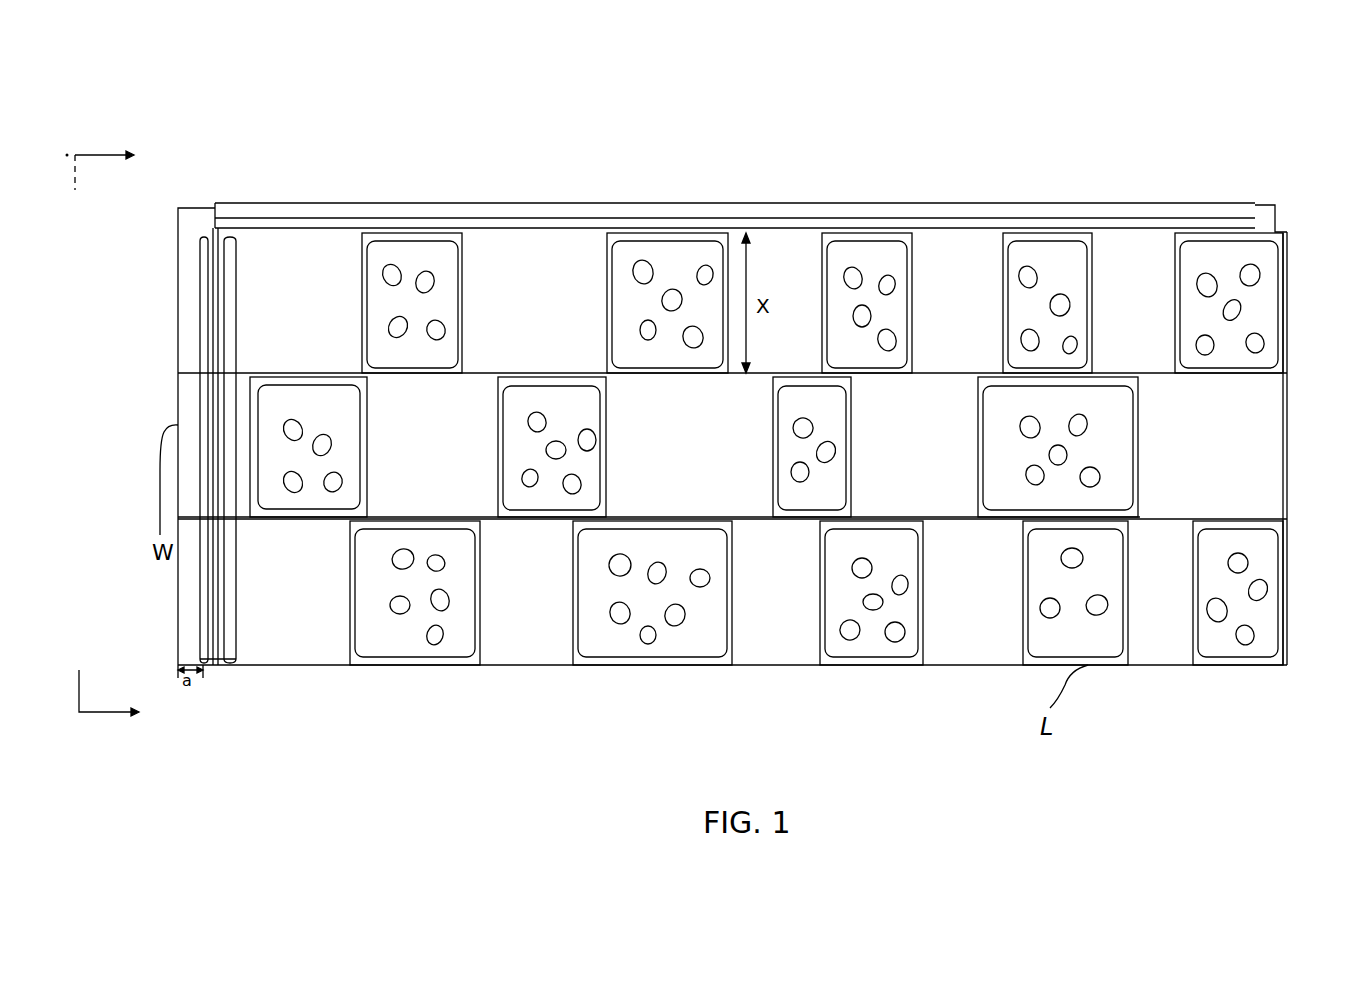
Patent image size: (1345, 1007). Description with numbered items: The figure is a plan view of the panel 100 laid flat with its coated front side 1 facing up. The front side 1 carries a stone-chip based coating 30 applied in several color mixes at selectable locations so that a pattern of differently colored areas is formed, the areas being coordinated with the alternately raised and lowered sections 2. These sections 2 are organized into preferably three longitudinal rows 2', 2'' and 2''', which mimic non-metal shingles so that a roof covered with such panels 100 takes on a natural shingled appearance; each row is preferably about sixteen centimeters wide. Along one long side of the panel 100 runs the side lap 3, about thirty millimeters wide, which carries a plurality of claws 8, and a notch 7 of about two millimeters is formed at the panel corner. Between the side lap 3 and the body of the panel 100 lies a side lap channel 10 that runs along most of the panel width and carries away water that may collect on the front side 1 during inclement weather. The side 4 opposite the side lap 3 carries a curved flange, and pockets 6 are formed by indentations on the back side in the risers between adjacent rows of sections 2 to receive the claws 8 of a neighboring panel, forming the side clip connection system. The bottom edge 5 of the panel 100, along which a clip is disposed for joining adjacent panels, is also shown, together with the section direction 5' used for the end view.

The front side 1 is at (1051, 270).
The alternately raised and lowered sections 2 is at (766, 431).
The longitudinal row 2' is at (964, 252).
The longitudinal row 2'' is at (776, 596).
The longitudinal row 2''' is at (526, 626).
The side lap 3 is at (188, 270).
The side 4 is at (1288, 315).
The bottom edge 5 is at (732, 700).
The left edge 5' is at (152, 451).
The pockets 6 is at (1263, 370).
The notch 7 is at (180, 215).
The claws 8 is at (178, 373).
The side lap channel 10 is at (217, 665).
The stone-chip based coating 30 is at (1062, 305).
The panel 100 is at (560, 762).